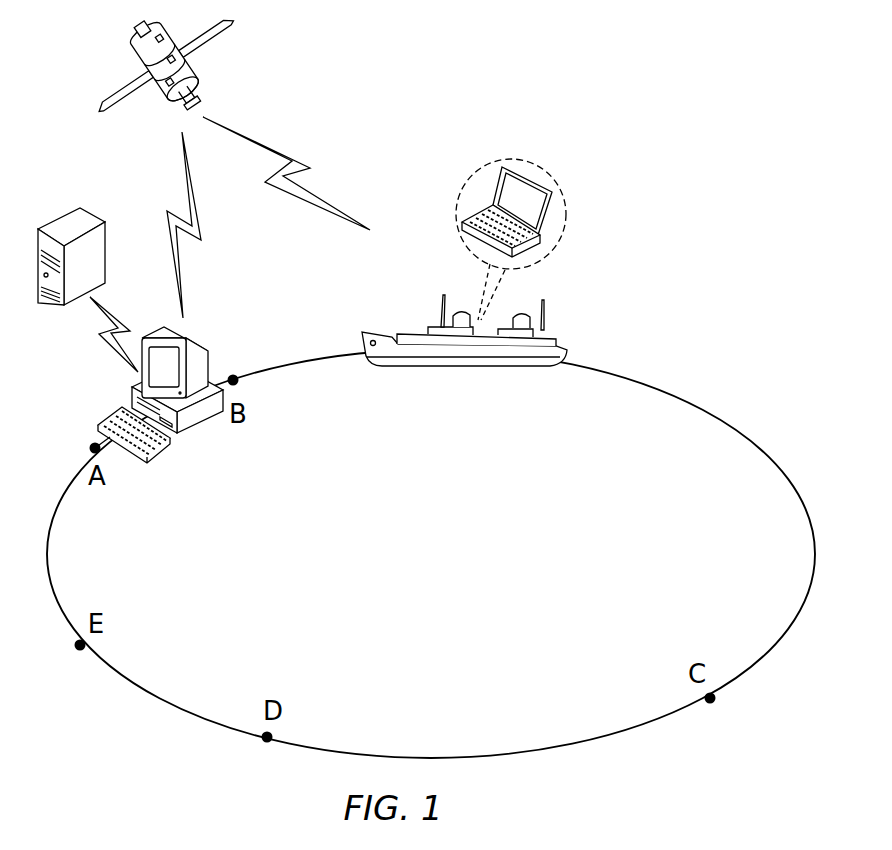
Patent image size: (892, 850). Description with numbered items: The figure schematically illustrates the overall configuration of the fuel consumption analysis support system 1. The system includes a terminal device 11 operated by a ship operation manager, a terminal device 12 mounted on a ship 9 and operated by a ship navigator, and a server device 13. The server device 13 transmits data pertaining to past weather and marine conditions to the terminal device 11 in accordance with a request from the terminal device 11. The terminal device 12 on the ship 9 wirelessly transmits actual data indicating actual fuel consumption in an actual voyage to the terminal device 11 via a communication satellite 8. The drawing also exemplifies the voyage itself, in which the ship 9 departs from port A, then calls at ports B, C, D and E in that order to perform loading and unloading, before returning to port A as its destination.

The fuel consumption analysis support system 1 is at (618, 123).
The communication satellite 8 is at (130, 98).
The ship 9 is at (558, 345).
The terminal device 11 is at (202, 350).
The terminal device 12 is at (546, 231).
The server device 13 is at (66, 226).